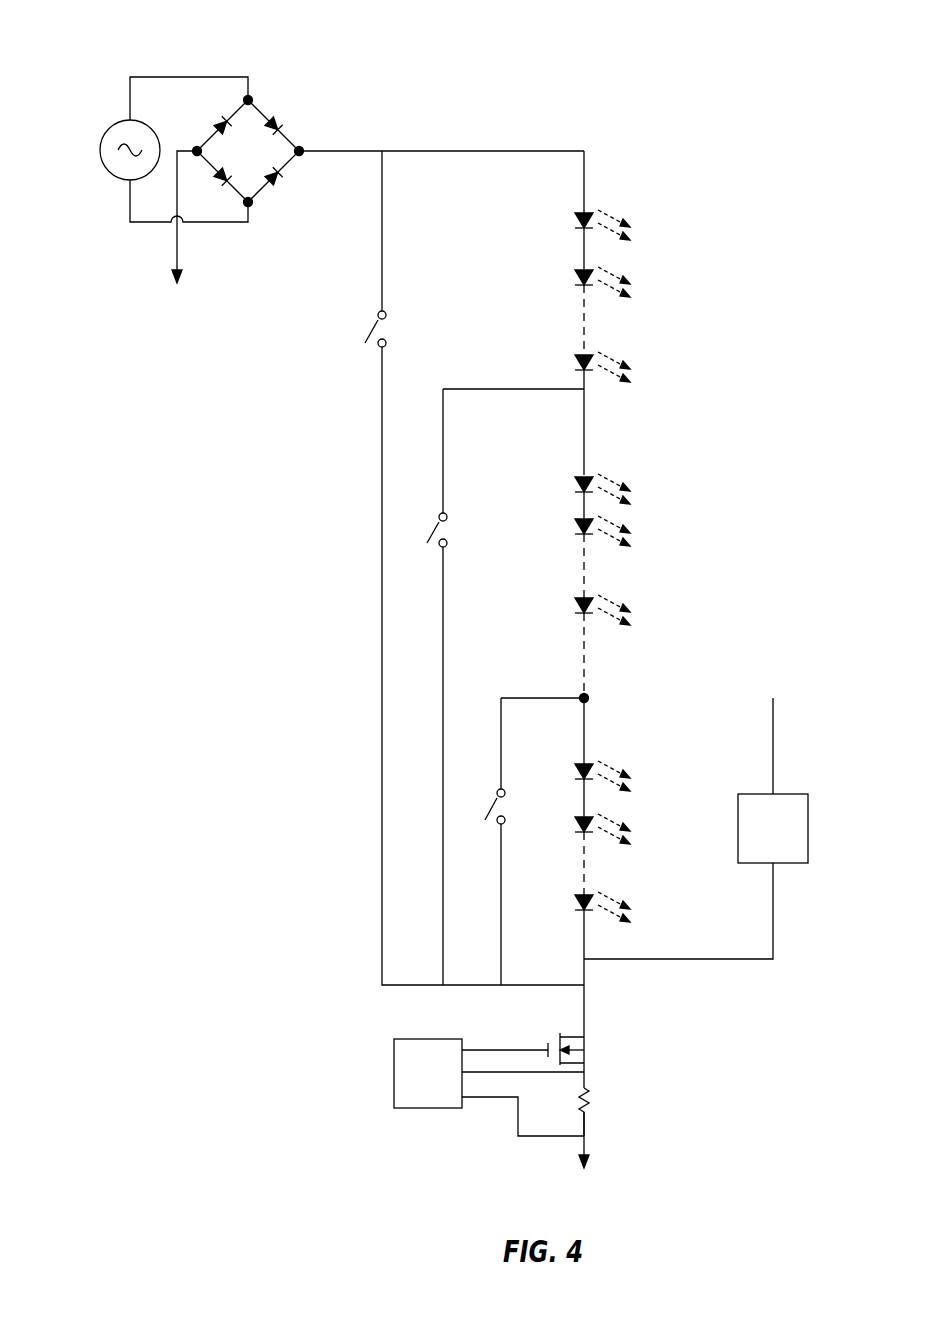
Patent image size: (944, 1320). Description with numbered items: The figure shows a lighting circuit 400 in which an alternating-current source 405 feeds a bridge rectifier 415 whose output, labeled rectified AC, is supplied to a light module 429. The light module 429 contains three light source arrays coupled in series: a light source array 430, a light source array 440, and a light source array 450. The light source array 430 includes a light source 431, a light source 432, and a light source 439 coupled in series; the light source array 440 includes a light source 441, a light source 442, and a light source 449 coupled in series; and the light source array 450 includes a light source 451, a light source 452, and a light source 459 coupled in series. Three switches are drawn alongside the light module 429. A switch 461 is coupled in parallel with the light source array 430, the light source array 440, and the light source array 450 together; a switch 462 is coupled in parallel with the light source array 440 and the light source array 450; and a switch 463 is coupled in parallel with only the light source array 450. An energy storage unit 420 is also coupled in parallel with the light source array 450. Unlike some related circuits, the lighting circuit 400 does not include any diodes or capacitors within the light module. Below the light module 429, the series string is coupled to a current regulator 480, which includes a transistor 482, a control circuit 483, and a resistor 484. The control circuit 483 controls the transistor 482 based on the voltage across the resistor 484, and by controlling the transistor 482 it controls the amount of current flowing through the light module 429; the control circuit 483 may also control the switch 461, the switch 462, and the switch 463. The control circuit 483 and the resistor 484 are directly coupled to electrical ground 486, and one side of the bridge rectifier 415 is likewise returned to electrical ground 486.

The lighting circuit 400 is at (778, 45).
The AC power source 405 is at (110, 128).
The bridge rectifier 415 is at (299, 93).
The energy storage unit 420 is at (696, 828).
The light module 429 is at (630, 112).
The light source array 430 is at (608, 194).
The light source 431 is at (577, 214).
The light source 432 is at (577, 271).
The light source 439 is at (577, 356).
The light source array 440 is at (607, 448).
The light source 441 is at (577, 478).
The light source 442 is at (577, 520).
The light source 449 is at (577, 599).
The light source array 450 is at (608, 747).
The light source 451 is at (577, 766).
The light source 452 is at (577, 818).
The light source 459 is at (577, 896).
The switch 461 is at (371, 331).
The switch 462 is at (434, 535).
The switch 463 is at (492, 810).
The current regulator 480 is at (360, 1038).
The transistor 482 is at (590, 1052).
The control circuit 483 is at (489, 1087).
The resistor 484 is at (590, 1110).
The electrical ground 486 is at (175, 282).